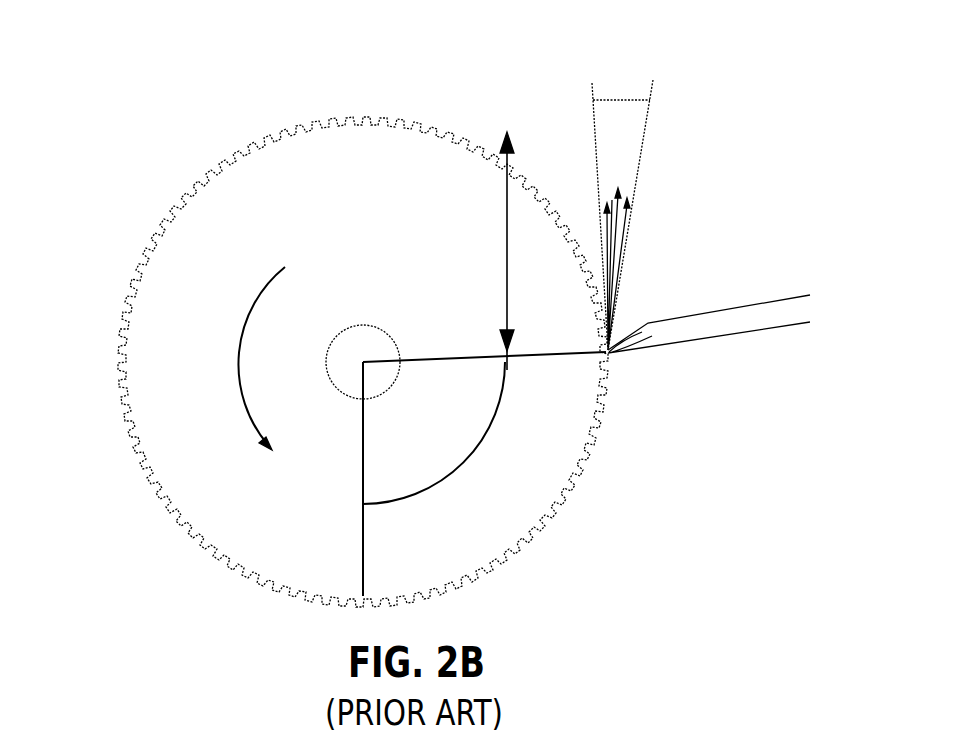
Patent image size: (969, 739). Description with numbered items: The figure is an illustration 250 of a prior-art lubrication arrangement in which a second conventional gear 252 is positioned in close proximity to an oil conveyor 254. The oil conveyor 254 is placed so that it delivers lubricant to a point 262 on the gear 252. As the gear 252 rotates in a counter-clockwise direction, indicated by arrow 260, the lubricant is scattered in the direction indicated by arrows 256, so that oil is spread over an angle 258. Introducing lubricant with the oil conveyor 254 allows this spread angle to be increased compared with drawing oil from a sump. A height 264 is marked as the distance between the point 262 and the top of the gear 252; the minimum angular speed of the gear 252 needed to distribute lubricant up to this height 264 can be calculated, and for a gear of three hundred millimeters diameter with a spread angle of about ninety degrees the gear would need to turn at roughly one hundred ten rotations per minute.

The illustration 250 is at (97, 86).
The second conventional gear 252 is at (162, 247).
The oil conveyor 254 is at (681, 318).
The arrows 256 is at (628, 232).
The angle 258 is at (615, 93).
The arrow 260 is at (238, 352).
The point 262 is at (605, 352).
The height 264 is at (507, 243).